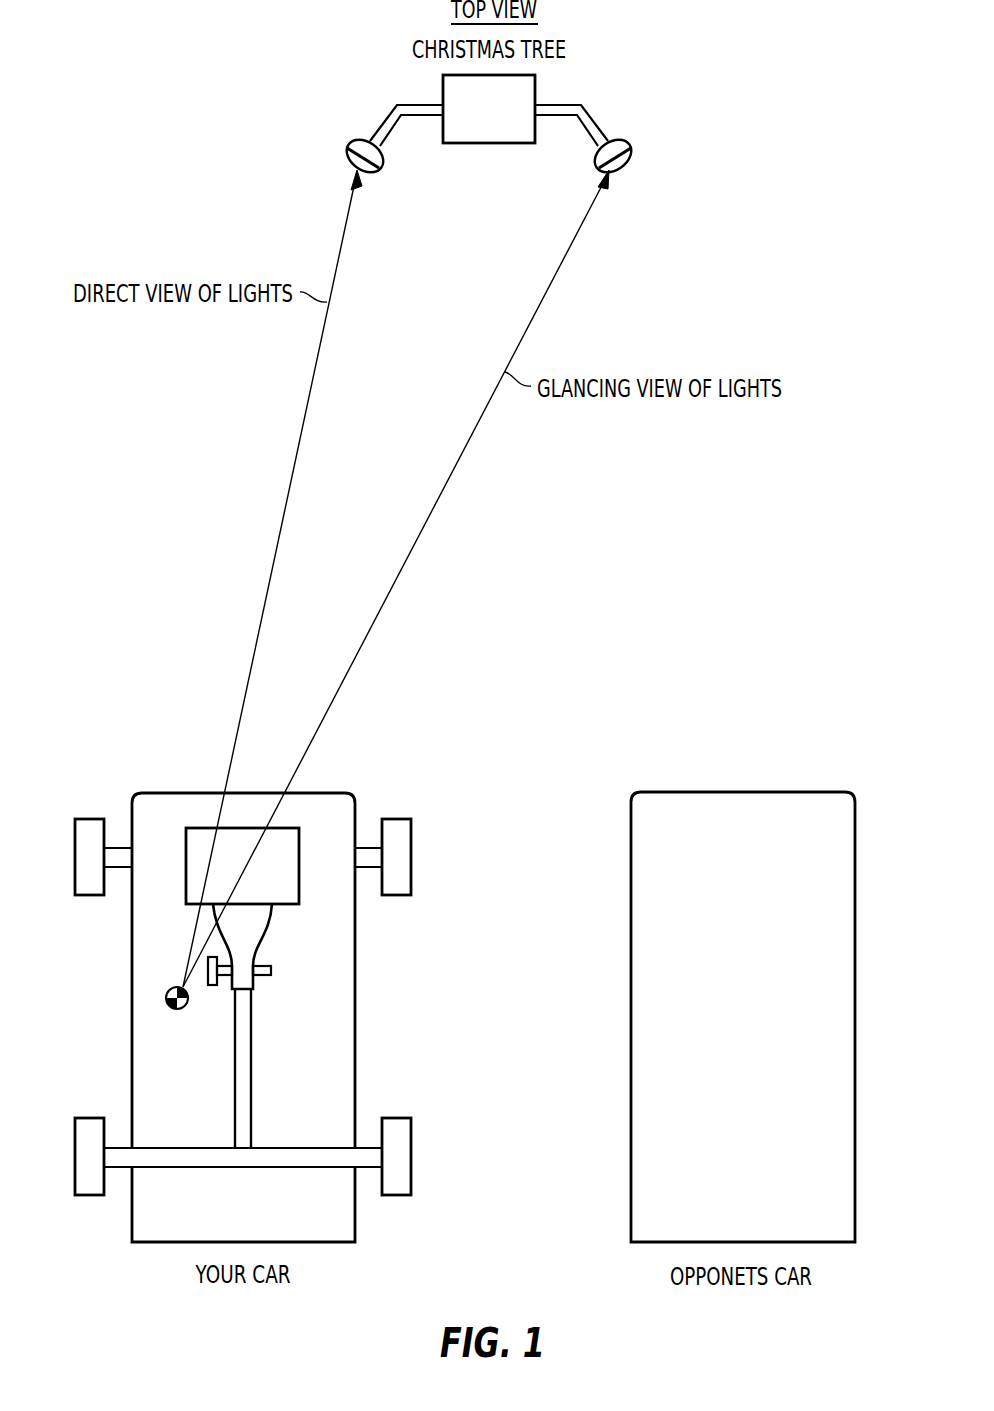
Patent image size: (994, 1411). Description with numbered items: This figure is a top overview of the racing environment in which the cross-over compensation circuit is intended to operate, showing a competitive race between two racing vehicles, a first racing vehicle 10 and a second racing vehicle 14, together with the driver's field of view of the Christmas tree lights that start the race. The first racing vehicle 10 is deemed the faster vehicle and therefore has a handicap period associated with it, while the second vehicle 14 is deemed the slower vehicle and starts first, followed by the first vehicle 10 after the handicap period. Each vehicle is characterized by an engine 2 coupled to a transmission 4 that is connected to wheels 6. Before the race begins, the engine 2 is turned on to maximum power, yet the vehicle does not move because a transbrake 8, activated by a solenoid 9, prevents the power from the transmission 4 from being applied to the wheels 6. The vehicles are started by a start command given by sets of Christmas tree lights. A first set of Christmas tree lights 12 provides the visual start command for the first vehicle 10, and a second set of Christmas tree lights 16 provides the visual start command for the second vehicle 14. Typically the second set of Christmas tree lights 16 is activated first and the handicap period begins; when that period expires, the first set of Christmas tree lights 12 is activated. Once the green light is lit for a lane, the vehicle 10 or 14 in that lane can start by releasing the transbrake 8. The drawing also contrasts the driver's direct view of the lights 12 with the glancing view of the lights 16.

The engine 2 is at (300, 885).
The transmission 4 is at (258, 933).
The wheels 6 is at (75, 889).
The transbrake 8 is at (228, 976).
The solenoid 9 is at (214, 985).
The first racing vehicle 10 is at (355, 1050).
The first set of Christmas tree lights 12 is at (383, 168).
The second racing vehicle 14 is at (851, 1051).
The second set of Christmas tree lights 16 is at (632, 160).